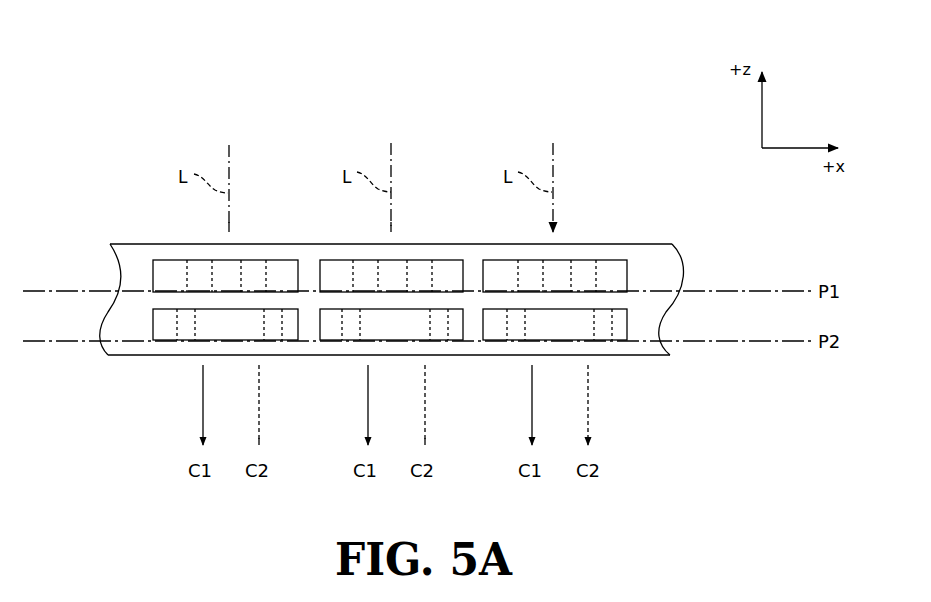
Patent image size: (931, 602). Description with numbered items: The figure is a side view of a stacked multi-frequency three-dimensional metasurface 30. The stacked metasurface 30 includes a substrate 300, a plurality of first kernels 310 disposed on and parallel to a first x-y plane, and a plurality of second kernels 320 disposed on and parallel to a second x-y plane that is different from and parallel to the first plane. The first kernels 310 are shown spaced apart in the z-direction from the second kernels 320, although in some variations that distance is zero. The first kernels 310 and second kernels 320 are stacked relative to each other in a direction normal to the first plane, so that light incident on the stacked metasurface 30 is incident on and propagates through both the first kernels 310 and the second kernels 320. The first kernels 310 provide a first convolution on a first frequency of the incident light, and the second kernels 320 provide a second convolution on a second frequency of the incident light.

The stacked 3D metasurface 30 is at (277, 76).
The substrate 300 is at (139, 243).
The plurality of first kernels 310 is at (605, 268).
The plurality of second kernels 320 is at (603, 329).